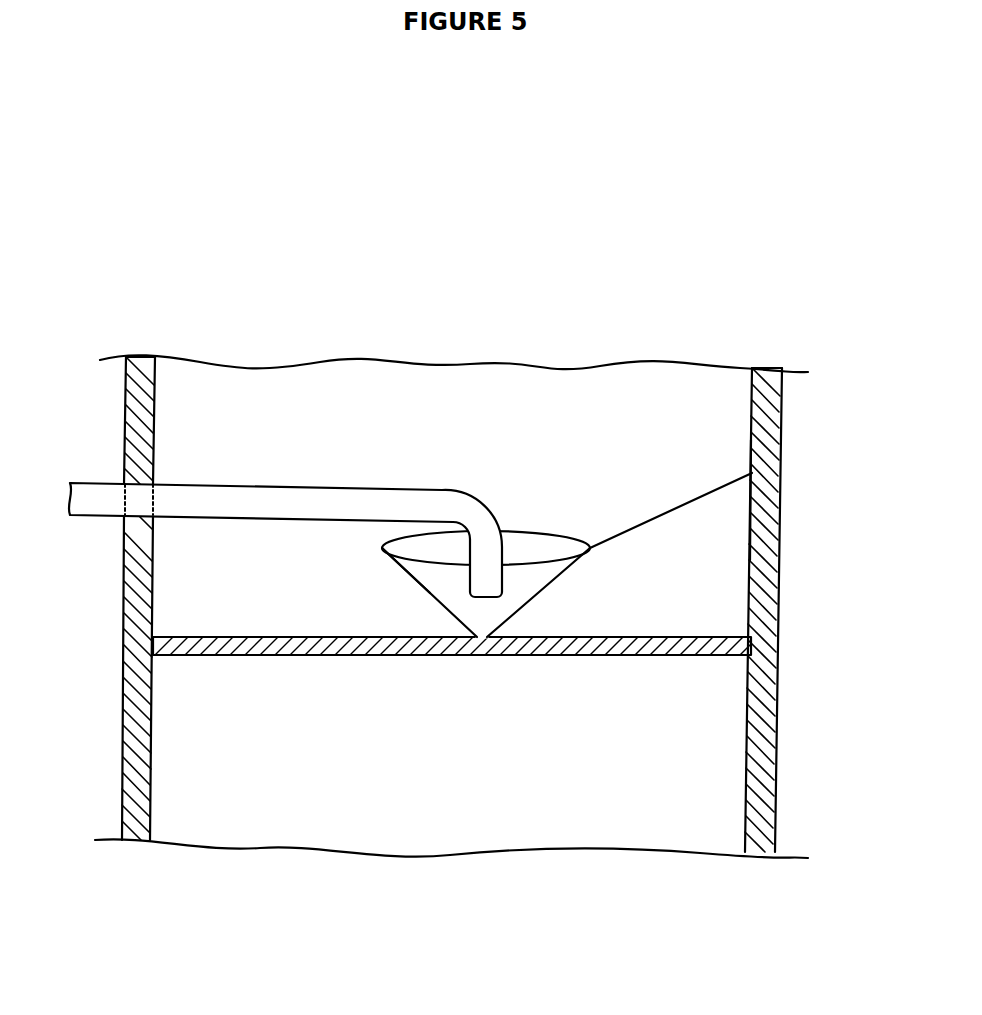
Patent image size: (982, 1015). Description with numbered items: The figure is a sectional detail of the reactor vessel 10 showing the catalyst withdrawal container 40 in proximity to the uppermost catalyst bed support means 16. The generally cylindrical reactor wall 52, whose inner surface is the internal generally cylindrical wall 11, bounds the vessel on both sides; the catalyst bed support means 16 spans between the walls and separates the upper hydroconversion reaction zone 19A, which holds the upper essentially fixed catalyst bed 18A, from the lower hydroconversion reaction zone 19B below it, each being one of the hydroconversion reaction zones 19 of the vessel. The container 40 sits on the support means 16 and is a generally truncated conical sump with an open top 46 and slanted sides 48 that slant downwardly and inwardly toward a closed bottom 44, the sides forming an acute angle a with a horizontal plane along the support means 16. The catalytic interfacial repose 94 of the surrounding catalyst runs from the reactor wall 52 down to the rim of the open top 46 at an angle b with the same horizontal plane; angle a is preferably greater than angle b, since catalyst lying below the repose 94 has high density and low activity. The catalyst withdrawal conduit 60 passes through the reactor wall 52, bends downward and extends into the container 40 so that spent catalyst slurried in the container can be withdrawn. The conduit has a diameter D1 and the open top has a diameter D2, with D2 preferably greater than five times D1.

The reactor vessel 10 is at (781, 545).
The internal generally cylindrical wall 11 is at (751, 531).
The catalyst bed support means 16 is at (388, 656).
The upper essentially fixed catalyst bed 18A is at (528, 372).
The hydroconversion reaction zone 19 is at (176, 678).
The upper hydroconversion reaction zone 19A is at (207, 390).
The lower hydroconversion reaction zone 19B is at (712, 702).
The container 40 is at (348, 550).
The closed bottom 44 is at (477, 640).
The open top 46 is at (533, 556).
The slanted sides 48 is at (424, 590).
The reactor wall 52 is at (137, 753).
The catalyst withdrawal conduit 60 is at (78, 517).
The catalytic interfacial repose 94 is at (691, 497).
The diameter of catalyst withdrawal conduit D1 is at (87, 485).
The diameter of open top D2 is at (586, 548).
The acute angle a is at (556, 571).
The angle of catalytic interfacial repose b is at (642, 534).